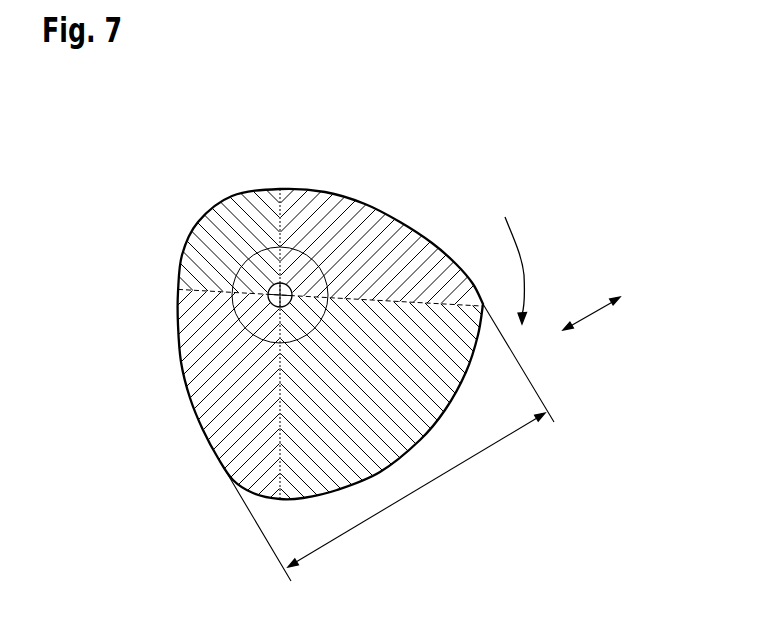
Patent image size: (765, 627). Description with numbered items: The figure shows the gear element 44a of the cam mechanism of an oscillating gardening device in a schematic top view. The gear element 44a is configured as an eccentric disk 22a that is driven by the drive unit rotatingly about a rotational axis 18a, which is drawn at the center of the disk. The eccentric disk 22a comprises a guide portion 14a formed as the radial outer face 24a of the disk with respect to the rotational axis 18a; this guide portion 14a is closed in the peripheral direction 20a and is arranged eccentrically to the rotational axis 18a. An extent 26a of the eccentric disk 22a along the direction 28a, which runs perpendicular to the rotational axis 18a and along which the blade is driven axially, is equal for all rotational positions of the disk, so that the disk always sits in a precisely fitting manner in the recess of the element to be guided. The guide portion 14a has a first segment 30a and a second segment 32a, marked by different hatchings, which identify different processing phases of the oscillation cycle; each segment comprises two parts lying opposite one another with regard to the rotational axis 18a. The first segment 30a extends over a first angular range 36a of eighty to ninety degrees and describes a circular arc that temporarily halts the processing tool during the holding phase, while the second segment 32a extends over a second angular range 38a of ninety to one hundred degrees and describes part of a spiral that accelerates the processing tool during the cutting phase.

The guide portion 14a is at (330, 301).
The radial outer face 24a is at (257, 190).
The rotational axis 18a is at (290, 289).
The peripheral direction 20a is at (526, 259).
The eccentric disk 22a is at (377, 228).
The gear element 44a is at (410, 233).
The extent 26a is at (428, 485).
The direction 28a is at (592, 316).
The first segment 30a is at (209, 202).
The second segment 32a is at (152, 311).
The first angular range 36a is at (244, 264).
The second angular range 38a is at (243, 327).